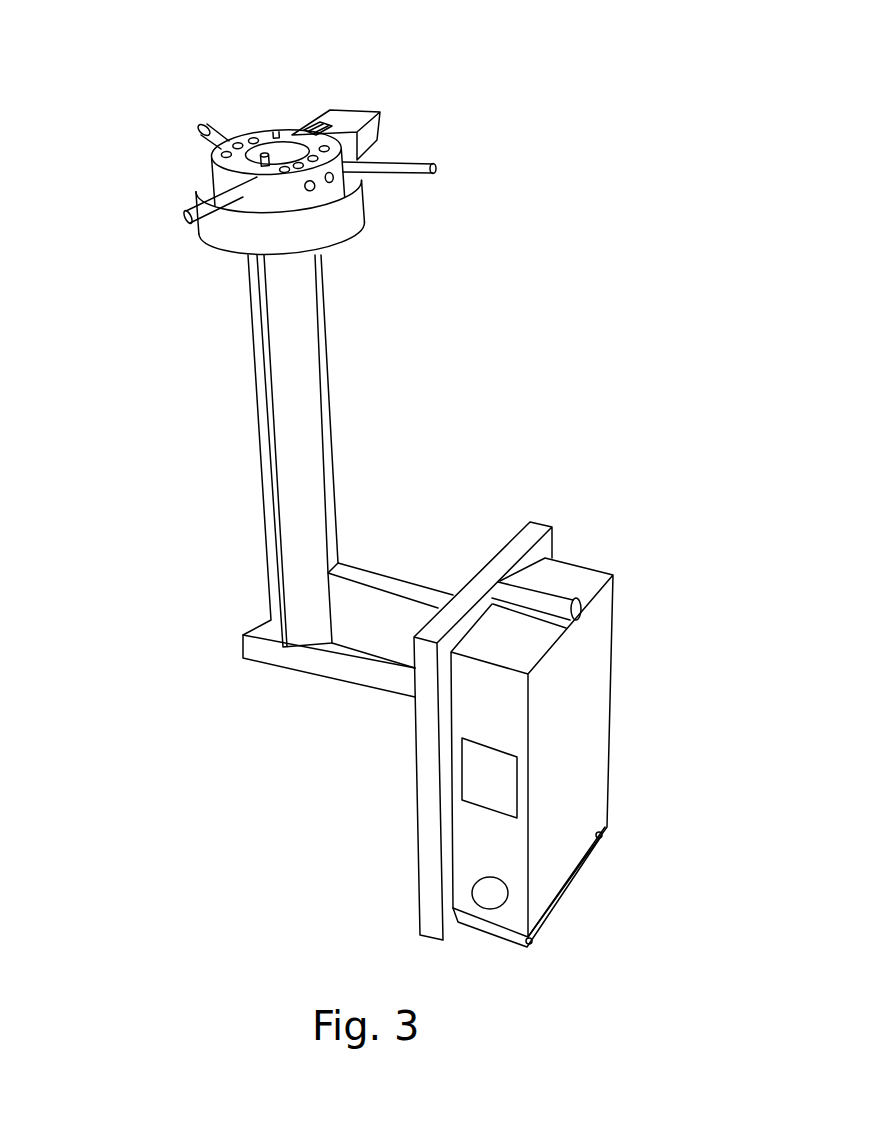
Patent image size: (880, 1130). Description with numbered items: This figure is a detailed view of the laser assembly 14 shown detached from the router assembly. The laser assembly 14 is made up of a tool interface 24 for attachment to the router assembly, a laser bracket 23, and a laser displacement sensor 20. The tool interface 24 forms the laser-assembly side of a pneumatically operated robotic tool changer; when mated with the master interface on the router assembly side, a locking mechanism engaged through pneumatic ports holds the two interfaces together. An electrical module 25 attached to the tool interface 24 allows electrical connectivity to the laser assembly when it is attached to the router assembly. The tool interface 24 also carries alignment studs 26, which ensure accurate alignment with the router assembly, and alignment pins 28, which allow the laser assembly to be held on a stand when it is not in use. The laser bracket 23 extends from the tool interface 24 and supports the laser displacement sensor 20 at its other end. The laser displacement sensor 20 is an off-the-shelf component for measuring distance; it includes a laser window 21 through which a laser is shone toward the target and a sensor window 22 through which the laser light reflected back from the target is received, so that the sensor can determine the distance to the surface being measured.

The laser assembly 14 is at (630, 344).
The laser displacement sensor 20 is at (568, 690).
The laser window 21 is at (490, 893).
The sensor window 22 is at (493, 780).
The laser bracket 23 is at (302, 537).
The tool interface 24 is at (275, 196).
The electrical module 25 is at (296, 132).
The alignment studs 26 is at (281, 136).
The alignment pins 28 is at (221, 133).